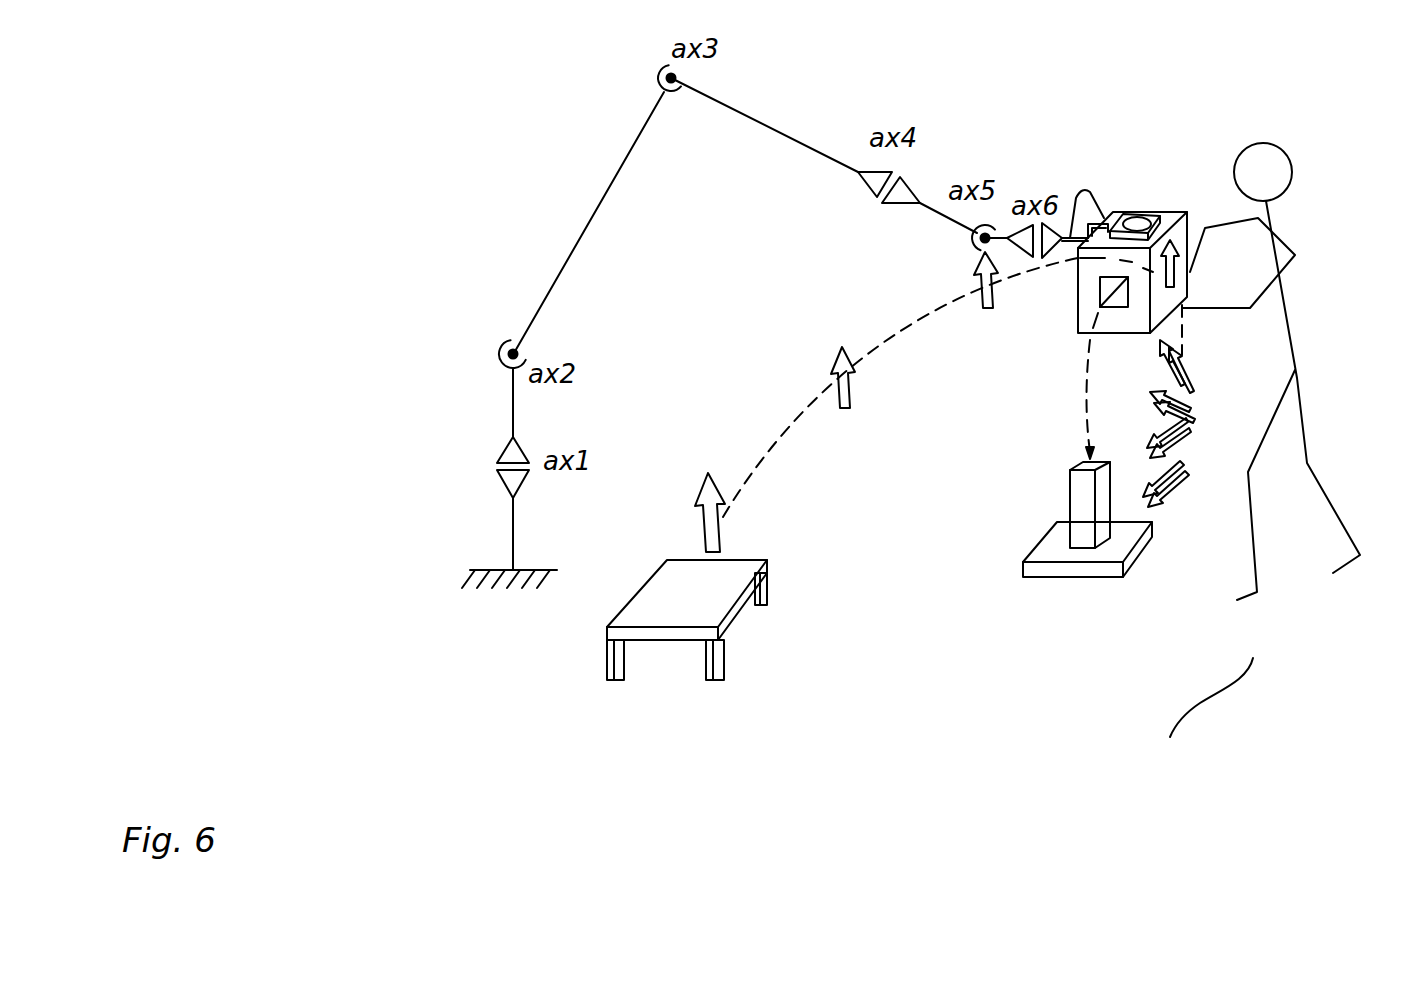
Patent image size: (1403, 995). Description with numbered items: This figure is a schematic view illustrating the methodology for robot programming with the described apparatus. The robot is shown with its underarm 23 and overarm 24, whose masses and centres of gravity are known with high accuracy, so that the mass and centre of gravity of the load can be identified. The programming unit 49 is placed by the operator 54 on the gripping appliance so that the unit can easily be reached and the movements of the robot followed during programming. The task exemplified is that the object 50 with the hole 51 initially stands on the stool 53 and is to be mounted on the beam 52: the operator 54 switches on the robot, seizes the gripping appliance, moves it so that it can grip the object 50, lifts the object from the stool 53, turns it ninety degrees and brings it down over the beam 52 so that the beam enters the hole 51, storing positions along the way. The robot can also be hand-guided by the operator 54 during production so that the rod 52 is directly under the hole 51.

The underarm 23 is at (598, 207).
The overarm 24 is at (755, 120).
The programming unit 49 is at (1132, 221).
The object 50 is at (1175, 212).
The hole 51 is at (1100, 283).
The beam 52 is at (1077, 488).
The stool 53 is at (720, 597).
The operator 54 is at (1290, 306).